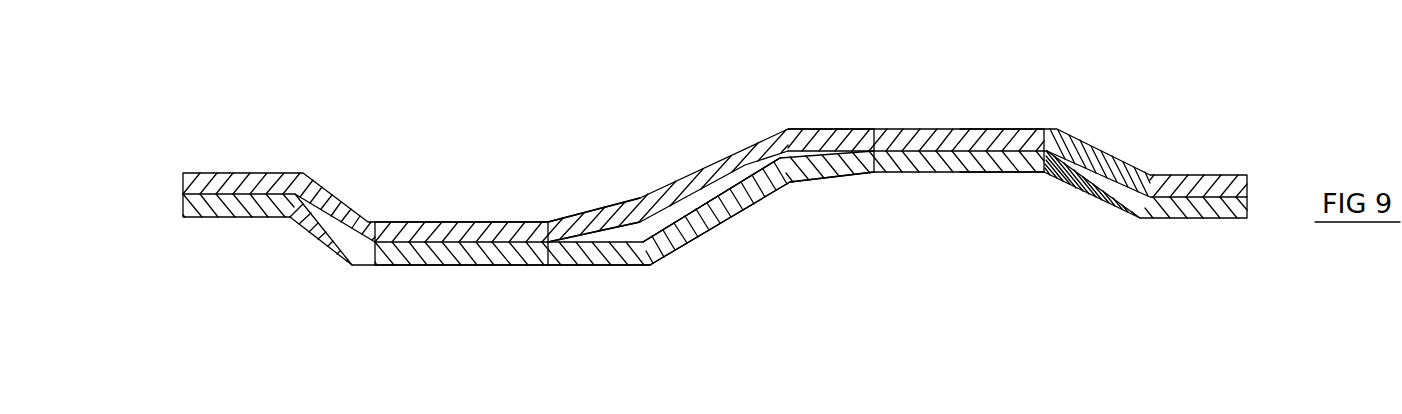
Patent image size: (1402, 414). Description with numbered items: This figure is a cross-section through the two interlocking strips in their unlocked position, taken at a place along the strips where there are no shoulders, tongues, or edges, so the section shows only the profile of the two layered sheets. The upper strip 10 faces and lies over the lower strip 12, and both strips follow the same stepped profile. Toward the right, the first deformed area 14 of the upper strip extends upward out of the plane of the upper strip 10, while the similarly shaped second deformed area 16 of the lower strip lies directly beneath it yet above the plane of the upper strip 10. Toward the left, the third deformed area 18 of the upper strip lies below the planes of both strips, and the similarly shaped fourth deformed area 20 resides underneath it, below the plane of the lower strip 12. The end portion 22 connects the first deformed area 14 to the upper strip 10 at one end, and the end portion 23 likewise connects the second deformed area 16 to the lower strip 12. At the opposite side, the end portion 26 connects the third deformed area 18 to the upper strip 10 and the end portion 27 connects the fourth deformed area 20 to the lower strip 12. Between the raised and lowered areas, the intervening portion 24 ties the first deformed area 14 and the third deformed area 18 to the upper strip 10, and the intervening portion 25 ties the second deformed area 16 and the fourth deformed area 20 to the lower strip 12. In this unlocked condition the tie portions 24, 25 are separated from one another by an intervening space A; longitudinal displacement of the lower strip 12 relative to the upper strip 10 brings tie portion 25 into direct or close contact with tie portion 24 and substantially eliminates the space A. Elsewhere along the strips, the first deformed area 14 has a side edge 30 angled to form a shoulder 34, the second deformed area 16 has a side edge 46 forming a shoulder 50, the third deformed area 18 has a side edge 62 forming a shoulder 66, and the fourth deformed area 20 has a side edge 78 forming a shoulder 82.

The upper strip 10 is at (1249, 181).
The lower strip 12 is at (1249, 208).
The first deformed area 14 is at (943, 130).
The second deformed area 16 is at (921, 166).
The third deformed area 18 is at (430, 222).
The fourth deformed area 20 is at (415, 266).
The end portion 22 is at (1108, 155).
The end portion 23 is at (1099, 200).
The intervening portion 24 is at (713, 162).
The intervening portion 25 is at (695, 235).
The end portion 26 is at (333, 195).
The end portion 27 is at (308, 232).
The side edge 30 is at (1018, 128).
The shoulder 34 is at (812, 130).
The side edge 46 is at (988, 168).
The shoulder 50 is at (820, 170).
The side edge 62 is at (476, 232).
The shoulder 66 is at (598, 212).
The side edge 78 is at (473, 252).
The shoulder 82 is at (627, 260).
The space A is at (703, 203).